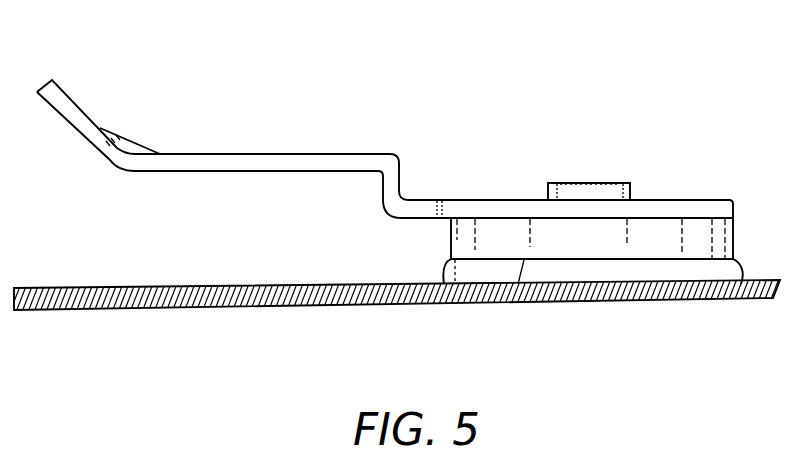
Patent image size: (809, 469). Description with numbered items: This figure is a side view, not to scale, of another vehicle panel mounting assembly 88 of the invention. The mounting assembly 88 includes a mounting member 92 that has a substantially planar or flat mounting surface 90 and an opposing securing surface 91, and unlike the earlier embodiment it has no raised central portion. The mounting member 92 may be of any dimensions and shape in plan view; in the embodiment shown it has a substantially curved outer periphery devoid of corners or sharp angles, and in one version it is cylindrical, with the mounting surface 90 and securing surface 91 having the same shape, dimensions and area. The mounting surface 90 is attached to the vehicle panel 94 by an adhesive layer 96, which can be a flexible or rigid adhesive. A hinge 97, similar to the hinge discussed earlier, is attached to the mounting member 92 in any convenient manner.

The mounting assembly 88 is at (590, 170).
The mounting surface 90 is at (518, 284).
The securing surface 91 is at (661, 216).
The mounting member 92 is at (722, 238).
The vehicle panel 94 is at (743, 307).
The adhesive layer 96 is at (442, 272).
The hinge 97 is at (277, 125).